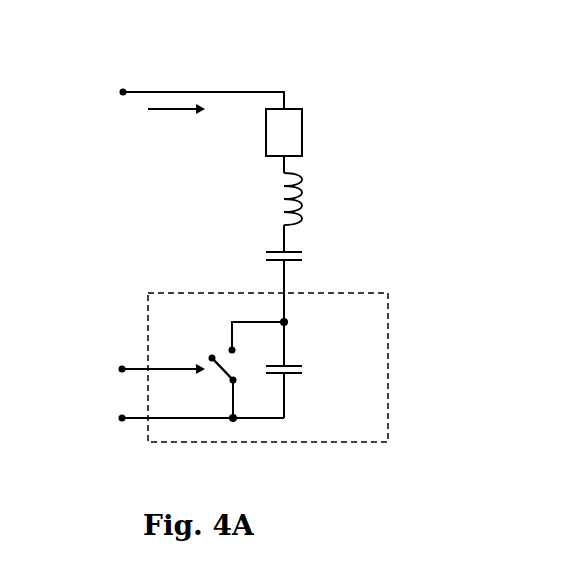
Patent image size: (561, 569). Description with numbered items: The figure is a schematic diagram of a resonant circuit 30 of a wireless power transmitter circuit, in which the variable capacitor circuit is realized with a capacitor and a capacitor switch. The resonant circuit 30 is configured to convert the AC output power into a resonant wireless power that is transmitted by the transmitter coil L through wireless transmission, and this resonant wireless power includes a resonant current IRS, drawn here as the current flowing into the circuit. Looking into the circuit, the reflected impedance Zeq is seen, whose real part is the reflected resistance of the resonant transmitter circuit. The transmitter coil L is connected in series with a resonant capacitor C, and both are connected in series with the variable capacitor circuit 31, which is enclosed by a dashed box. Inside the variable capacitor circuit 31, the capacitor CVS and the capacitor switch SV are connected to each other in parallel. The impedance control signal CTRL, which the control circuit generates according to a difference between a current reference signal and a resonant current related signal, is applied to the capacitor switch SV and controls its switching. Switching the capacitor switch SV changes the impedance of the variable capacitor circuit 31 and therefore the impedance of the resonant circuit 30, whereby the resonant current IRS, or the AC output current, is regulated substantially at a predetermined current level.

The resonant circuit 30 is at (398, 70).
The variable capacitor circuit 31 is at (375, 293).
The resonant current IRS is at (176, 126).
The reflected impedance Zeq is at (316, 132).
The transmitter coil L is at (308, 190).
The resonant capacitor C is at (298, 273).
The capacitor switch SV is at (232, 371).
The capacitor CVS is at (317, 370).
The impedance control signal CTRL is at (126, 369).